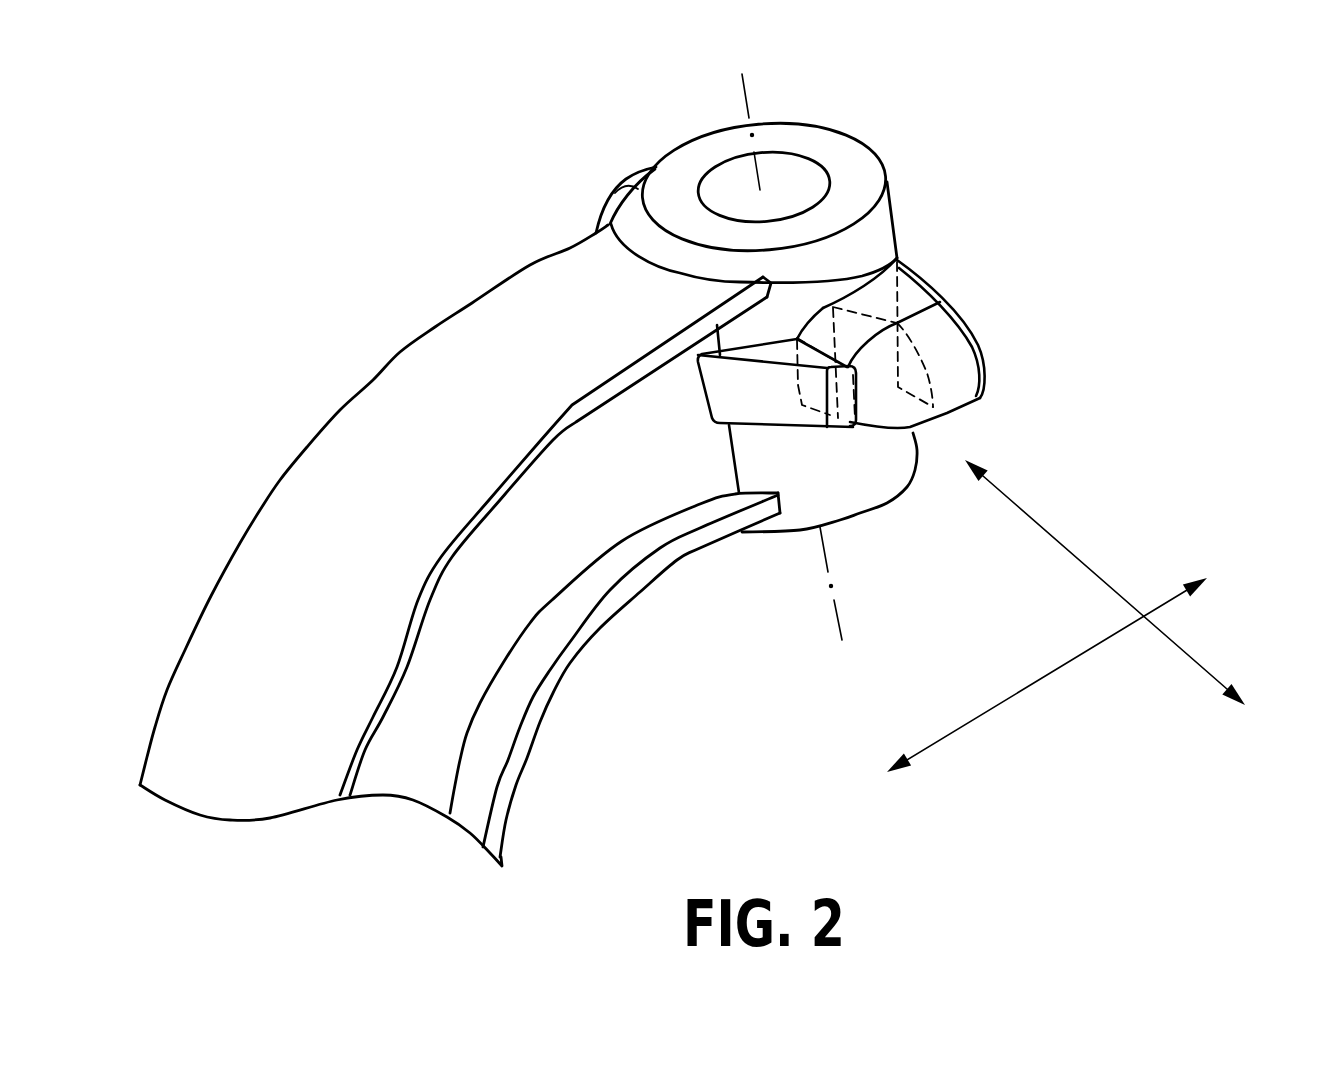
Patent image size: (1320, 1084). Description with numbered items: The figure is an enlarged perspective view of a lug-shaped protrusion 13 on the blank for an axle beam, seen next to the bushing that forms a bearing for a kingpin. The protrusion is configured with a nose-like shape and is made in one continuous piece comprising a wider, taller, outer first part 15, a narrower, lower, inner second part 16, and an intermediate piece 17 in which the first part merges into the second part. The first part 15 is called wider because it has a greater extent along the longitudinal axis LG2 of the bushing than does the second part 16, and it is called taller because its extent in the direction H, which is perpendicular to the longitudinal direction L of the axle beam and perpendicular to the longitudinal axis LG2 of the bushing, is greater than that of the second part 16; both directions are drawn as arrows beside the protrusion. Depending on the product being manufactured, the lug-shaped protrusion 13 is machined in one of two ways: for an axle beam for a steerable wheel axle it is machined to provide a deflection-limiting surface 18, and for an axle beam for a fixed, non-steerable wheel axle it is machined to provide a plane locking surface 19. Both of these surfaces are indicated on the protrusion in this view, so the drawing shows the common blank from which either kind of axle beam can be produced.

The lug-shaped protrusion 13 is at (970, 274).
The first part 15 is at (957, 377).
The second part 16 is at (762, 400).
The intermediate piece 17 is at (855, 380).
The deflection-limiting surface 18 is at (803, 403).
The plane locking surface 19 is at (907, 300).
The direction H is at (1030, 518).
The longitudinal direction of the axle beam L is at (973, 720).
The longitudinal axis of the bushing LG2 is at (782, 340).